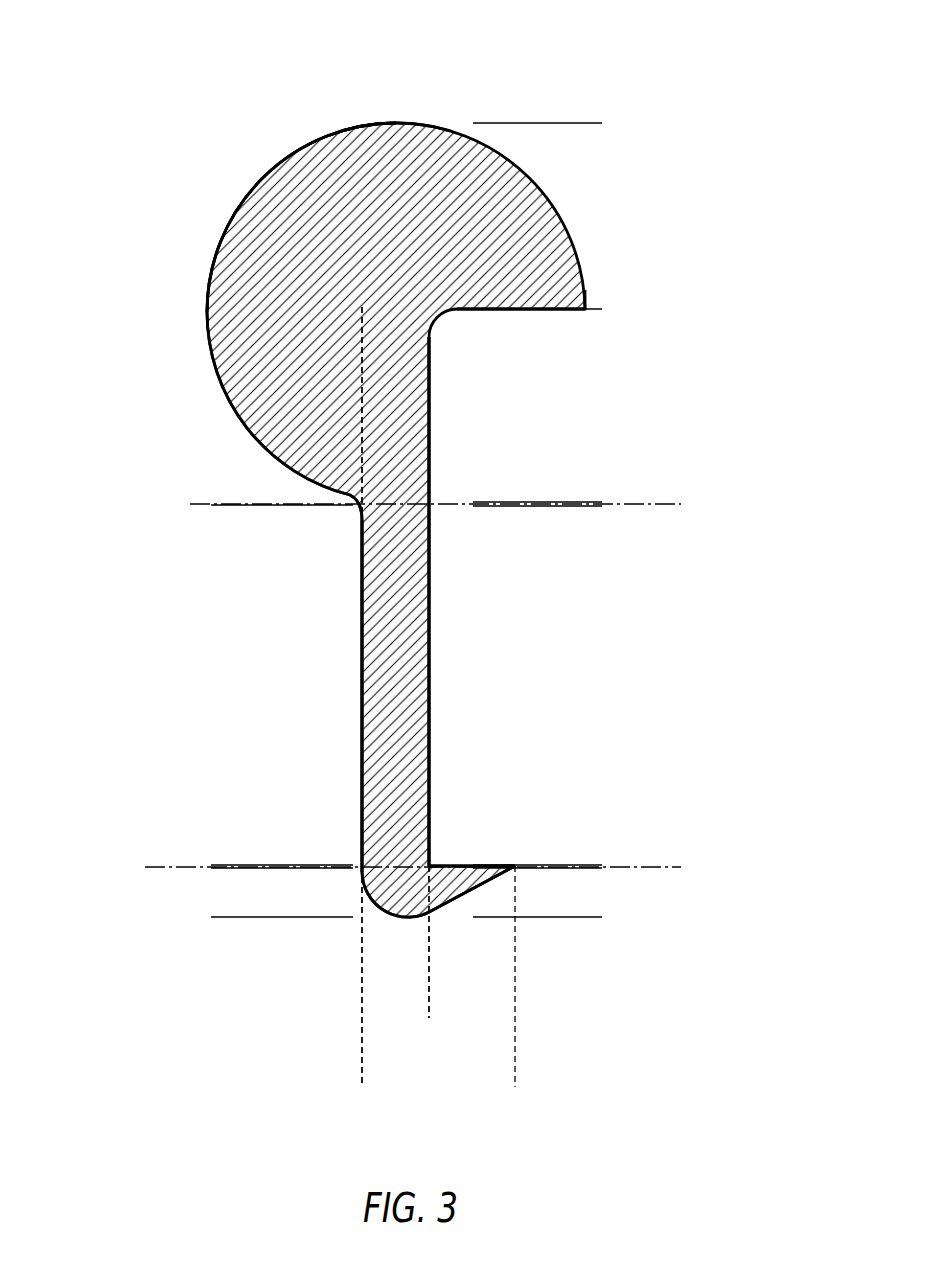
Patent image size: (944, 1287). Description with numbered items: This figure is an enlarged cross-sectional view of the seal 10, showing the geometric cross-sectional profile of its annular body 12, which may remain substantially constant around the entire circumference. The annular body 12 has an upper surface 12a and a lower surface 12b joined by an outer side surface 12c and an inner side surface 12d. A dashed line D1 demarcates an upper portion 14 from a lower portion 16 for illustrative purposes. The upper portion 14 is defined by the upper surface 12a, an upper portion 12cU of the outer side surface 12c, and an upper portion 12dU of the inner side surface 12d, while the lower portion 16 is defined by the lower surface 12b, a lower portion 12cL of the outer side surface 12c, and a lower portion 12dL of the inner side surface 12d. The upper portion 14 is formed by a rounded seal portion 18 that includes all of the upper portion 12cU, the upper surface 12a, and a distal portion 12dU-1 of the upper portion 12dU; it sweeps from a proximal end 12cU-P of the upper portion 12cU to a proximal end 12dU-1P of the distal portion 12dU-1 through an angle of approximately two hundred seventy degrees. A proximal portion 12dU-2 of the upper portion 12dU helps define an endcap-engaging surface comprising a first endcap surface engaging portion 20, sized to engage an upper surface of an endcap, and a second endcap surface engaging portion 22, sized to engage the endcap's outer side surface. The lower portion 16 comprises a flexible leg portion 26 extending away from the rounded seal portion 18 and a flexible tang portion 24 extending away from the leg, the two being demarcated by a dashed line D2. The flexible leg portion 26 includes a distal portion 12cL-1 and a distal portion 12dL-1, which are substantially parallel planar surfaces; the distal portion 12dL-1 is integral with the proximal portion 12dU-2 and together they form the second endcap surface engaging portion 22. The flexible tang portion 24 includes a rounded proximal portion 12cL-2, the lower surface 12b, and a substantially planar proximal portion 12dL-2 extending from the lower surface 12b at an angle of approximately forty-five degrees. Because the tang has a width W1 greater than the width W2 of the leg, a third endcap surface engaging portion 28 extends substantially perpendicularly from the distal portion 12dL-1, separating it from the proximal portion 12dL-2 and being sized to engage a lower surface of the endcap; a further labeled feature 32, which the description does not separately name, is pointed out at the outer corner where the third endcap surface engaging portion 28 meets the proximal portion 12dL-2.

The seal 10 is at (152, 63).
The annular body 12 is at (110, 367).
The upper surface 12a is at (408, 118).
The lower surface 12b is at (401, 927).
The outer side surface 12c is at (74, 172).
The upper portion of the outer side surface 12cU is at (175, 202).
The proximal end of the upper portion of the outer side surface 12cU-P is at (355, 515).
The lower portion of the outer side surface 12cL is at (136, 661).
The distal portion of the lower portion of the outer side surface 12cL-1 is at (211, 505).
The proximal portion of the lower portion of the outer side surface 12cL-2 is at (211, 868).
The inner side surface 12d is at (745, 807).
The upper portion of the inner side surface 12dU is at (679, 193).
The distal portion of the upper portion of the inner side surface 12dU-1 is at (602, 123).
The proximal end of the distal portion of the upper portion of the inner side surfac 12dU-1P is at (580, 313).
The proximal portion of the upper portion of the inner side surface 12dU-2 is at (602, 309).
The lower portion of the inner side surface 12dL is at (680, 663).
The distal portion of the lower portion of the inner side surface 12dL-1 is at (602, 506).
The proximal portion of the lower portion of the inner side surface 12dL-2 is at (602, 868).
The upper portion 14 is at (175, 368).
The lower portion 16 is at (285, 645).
The rounded seal portion 18 is at (330, 125).
The first endcap surface engaging portion 20 is at (505, 313).
The second endcap surface engaging portion 22 is at (436, 460).
The flexible tang portion 24 is at (482, 890).
The flexible leg portion 26 is at (358, 728).
The third endcap surface engaging portion 28 is at (483, 862).
The flange corner 32 is at (515, 862).
The dashed line D1 is at (651, 500).
The dashed line D2 is at (184, 862).
The width W1 is at (515, 1063).
The width W2 is at (429, 996).